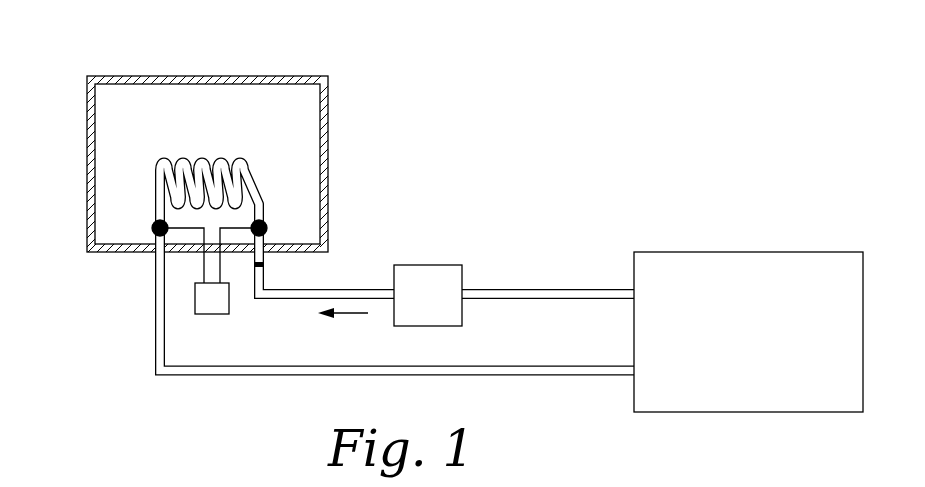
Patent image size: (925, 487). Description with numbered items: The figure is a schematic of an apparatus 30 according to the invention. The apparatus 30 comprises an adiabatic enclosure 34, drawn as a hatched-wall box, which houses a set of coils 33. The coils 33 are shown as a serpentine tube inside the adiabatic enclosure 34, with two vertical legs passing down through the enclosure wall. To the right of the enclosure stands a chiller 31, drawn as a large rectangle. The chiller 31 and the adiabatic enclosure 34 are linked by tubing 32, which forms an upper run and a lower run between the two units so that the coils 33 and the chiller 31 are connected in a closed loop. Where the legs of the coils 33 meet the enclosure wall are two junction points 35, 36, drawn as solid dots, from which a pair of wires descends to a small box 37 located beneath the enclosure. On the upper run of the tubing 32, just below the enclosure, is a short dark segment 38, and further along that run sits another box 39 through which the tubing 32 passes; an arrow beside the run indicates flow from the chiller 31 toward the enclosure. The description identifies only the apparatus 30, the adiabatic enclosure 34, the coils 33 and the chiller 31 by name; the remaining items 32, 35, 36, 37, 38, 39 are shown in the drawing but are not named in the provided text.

The apparatus 30 is at (519, 84).
The chiller 31 is at (737, 252).
The conduit tubing 32 is at (513, 362).
The coils 33 is at (157, 167).
The adiabatic enclosure 34 is at (87, 140).
The inlet connector 35 is at (152, 226).
The outlet connector 36 is at (266, 224).
The sensor / controller 37 is at (217, 314).
The flow restrictor / valve 38 is at (266, 264).
The pump 39 is at (432, 264).